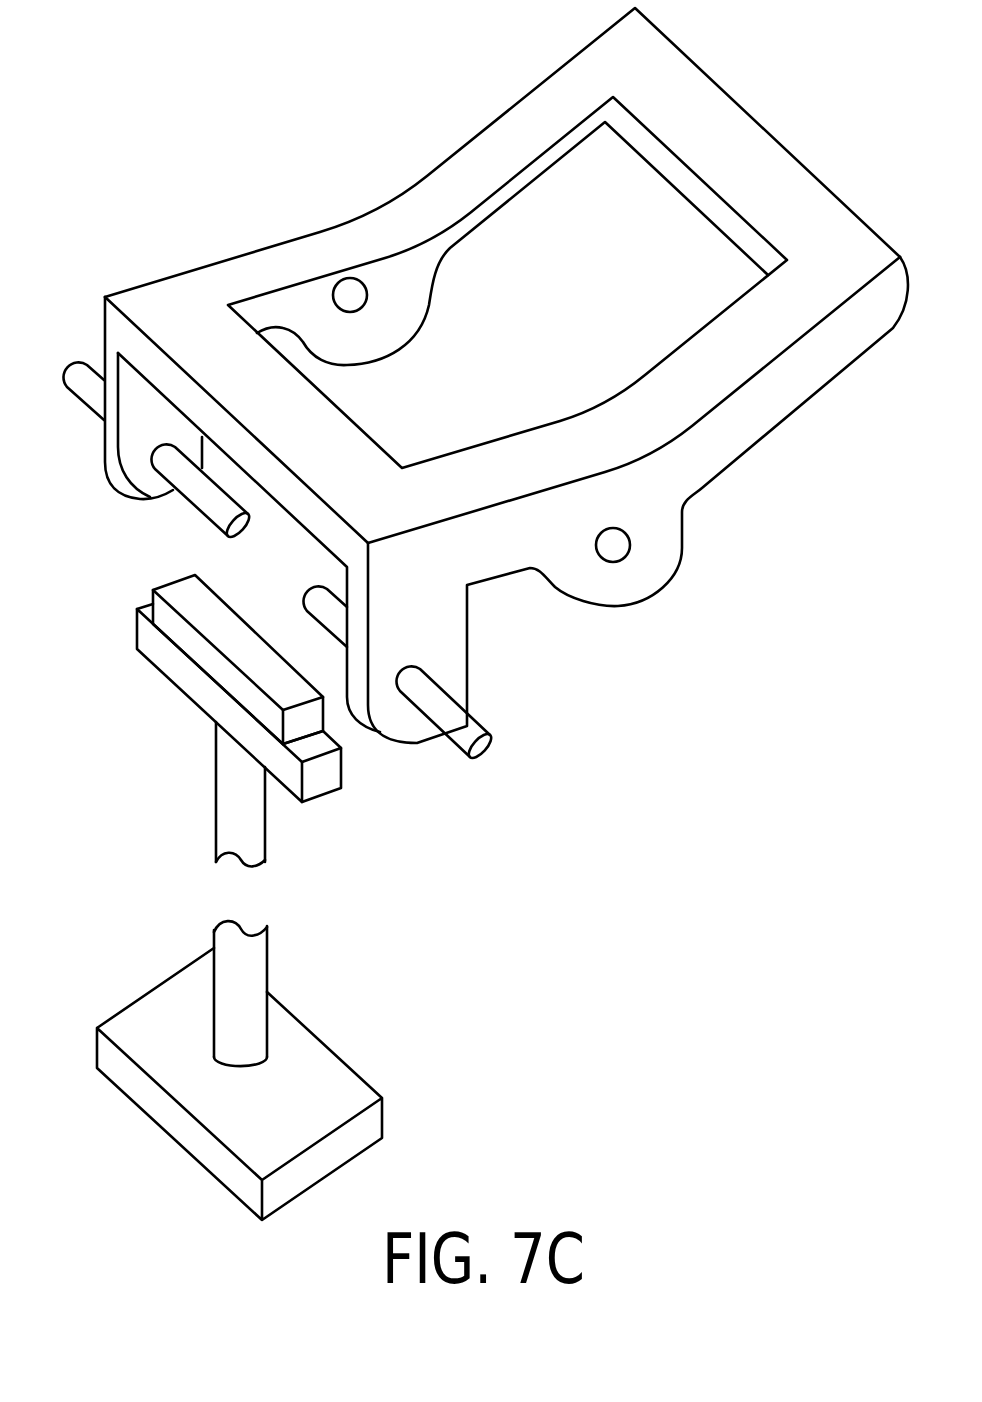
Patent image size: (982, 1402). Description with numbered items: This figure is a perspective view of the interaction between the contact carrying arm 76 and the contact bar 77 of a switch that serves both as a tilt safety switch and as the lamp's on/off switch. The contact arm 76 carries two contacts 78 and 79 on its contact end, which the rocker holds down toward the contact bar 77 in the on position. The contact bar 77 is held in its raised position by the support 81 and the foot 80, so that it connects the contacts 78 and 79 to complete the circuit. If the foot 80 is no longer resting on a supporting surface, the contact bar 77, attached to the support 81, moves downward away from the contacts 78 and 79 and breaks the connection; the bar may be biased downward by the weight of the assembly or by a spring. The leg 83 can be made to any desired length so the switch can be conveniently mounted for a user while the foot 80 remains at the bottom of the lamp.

The contact carrying arm 76 is at (573, 90).
The contact bar 77 is at (170, 620).
The contact 78 is at (207, 490).
The contact 79 is at (453, 715).
The foot 80 is at (310, 1086).
The support 81 is at (208, 704).
The leg 83 is at (237, 817).